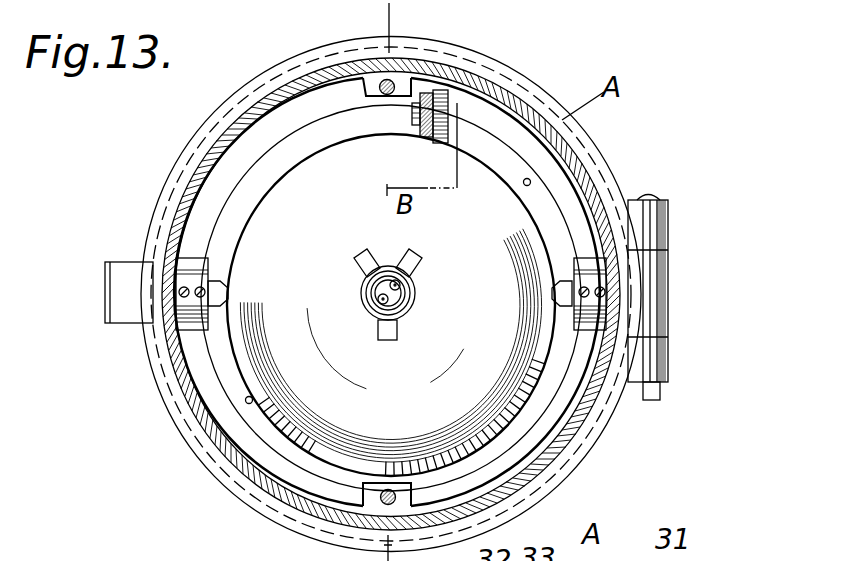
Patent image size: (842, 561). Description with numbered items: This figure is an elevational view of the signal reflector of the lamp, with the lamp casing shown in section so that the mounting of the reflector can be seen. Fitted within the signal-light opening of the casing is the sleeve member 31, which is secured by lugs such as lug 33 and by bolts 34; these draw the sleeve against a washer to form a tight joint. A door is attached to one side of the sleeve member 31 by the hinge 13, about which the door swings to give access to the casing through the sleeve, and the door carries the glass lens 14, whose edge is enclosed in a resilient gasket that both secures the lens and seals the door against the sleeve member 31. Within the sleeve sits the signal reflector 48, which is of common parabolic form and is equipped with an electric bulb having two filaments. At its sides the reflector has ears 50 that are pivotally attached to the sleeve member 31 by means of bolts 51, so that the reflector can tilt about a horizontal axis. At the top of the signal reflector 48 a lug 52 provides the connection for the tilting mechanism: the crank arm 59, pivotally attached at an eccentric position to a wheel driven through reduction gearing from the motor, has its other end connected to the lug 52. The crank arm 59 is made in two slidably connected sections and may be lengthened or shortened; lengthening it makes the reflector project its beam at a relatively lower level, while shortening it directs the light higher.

The hinge 13 is at (653, 277).
The glass lens 14 is at (372, 18).
The sleeve member 31 is at (512, 112).
The lug 33 is at (373, 92).
The bolt 34 is at (386, 95).
The signal reflector 48 is at (492, 190).
The ears 50 is at (200, 278).
The bolts 51 is at (222, 293).
The lug 52 is at (450, 100).
The crank arm 59 is at (427, 97).